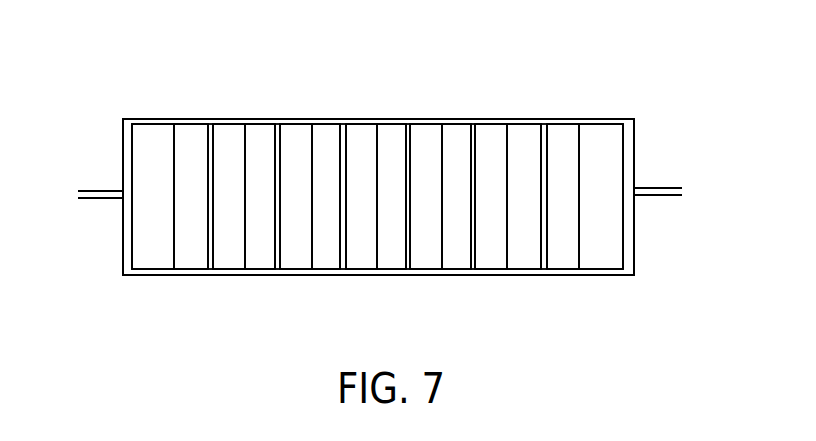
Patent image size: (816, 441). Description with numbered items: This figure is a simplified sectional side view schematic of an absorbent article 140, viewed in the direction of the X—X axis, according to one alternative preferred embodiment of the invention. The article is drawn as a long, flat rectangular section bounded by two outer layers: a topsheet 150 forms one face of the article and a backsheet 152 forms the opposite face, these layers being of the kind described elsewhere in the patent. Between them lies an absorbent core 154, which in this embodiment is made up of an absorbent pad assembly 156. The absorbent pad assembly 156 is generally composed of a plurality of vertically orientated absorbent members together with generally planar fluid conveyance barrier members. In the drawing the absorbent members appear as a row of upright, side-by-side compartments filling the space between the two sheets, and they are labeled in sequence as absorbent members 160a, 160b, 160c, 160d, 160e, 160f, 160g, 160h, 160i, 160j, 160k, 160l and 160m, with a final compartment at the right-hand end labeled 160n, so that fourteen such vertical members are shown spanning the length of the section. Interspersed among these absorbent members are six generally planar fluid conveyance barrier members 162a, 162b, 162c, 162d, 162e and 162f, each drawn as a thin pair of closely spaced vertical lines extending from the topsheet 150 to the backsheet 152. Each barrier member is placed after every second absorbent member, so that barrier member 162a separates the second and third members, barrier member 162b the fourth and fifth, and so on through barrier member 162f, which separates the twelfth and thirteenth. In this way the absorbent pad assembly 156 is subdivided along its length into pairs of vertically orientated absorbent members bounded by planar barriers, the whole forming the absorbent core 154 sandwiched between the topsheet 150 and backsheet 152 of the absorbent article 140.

The absorbent article 140 is at (566, 56).
The topsheet 150 is at (123, 145).
The backsheet 152 is at (123, 240).
The absorbent core 154 is at (157, 236).
The absorbent pad assembly 156 is at (593, 229).
The vertically orientated absorbent member 160a is at (148, 140).
The vertically orientated absorbent member 160b is at (189, 138).
The vertically orientated absorbent member 160c is at (232, 140).
The vertically orientated absorbent member 160d is at (263, 138).
The vertically orientated absorbent member 160e is at (297, 253).
The vertically orientated absorbent member 160f is at (328, 140).
The vertically orientated absorbent member 160g is at (362, 255).
The vertically orientated absorbent member 160h is at (390, 140).
The vertically orientated absorbent member 160i is at (427, 250).
The vertically orientated absorbent member 160j is at (459, 147).
The vertically orientated absorbent member 160k is at (490, 255).
The vertically orientated absorbent member 160l is at (523, 147).
The vertically orientated absorbent member 160m is at (560, 252).
The electrode segment 160n is at (602, 148).
The fluid conveyance barrier member 162a is at (210, 265).
The fluid conveyance barrier member 162b is at (273, 262).
The fluid conveyance barrier member 162c is at (343, 262).
The fluid conveyance barrier member 162d is at (408, 262).
The fluid conveyance barrier member 162e is at (472, 263).
The fluid conveyance barrier member 162f is at (548, 215).